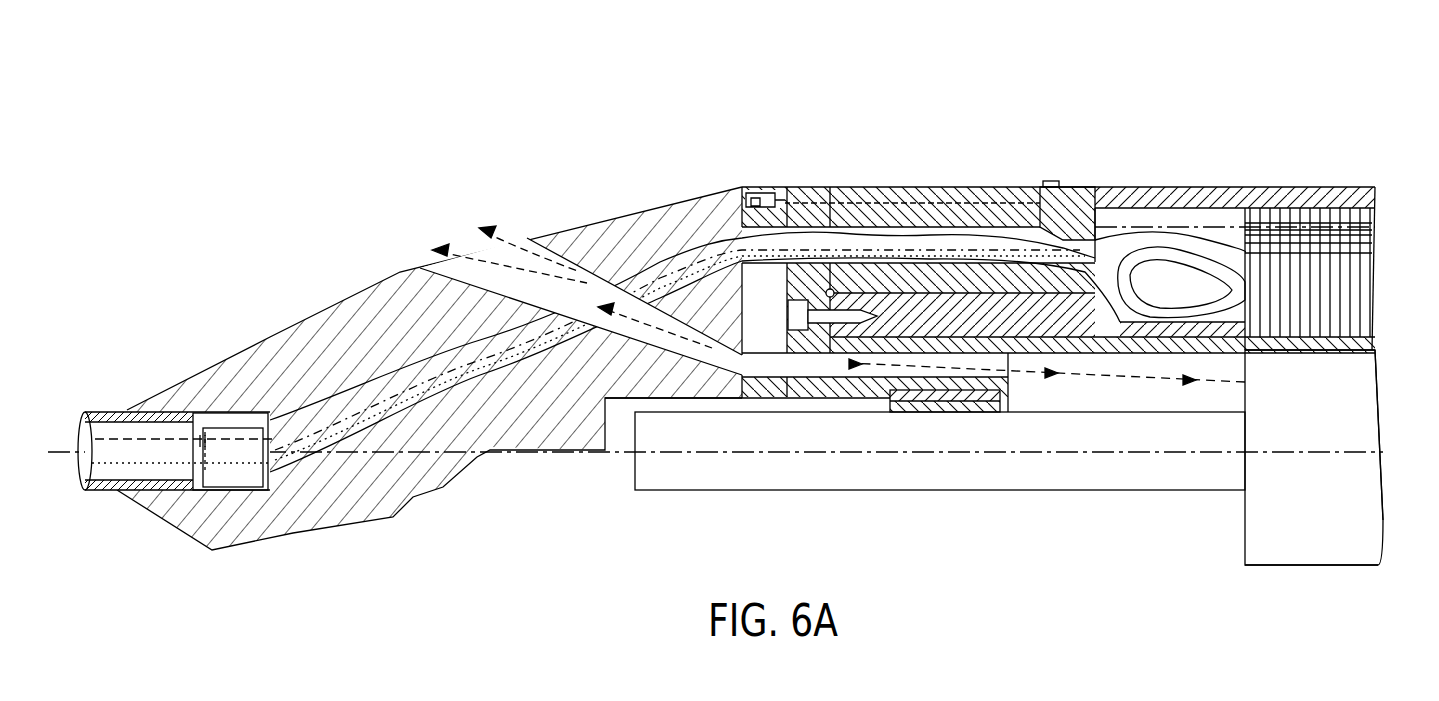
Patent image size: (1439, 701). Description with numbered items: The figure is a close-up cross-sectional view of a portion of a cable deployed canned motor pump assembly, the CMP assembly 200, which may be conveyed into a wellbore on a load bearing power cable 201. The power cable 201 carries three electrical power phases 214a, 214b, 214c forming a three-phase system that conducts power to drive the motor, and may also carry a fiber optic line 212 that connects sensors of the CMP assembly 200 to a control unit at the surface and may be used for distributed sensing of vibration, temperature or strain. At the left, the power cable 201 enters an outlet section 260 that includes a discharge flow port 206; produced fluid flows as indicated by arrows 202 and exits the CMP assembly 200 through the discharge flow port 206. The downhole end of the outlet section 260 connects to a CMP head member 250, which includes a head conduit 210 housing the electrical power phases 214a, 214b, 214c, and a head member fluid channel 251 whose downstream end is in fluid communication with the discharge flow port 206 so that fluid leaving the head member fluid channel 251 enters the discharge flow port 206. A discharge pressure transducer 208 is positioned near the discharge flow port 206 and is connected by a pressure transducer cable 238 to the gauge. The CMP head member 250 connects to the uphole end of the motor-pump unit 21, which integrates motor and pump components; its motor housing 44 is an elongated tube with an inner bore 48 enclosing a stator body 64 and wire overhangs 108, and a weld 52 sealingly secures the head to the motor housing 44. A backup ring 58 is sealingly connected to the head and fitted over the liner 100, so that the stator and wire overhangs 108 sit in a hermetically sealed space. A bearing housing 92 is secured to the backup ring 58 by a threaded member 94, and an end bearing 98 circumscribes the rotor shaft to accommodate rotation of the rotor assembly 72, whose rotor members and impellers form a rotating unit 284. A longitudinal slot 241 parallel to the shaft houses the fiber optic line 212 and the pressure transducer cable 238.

The CMP assembly 200 is at (318, 118).
The power cable 201 is at (137, 410).
The outlet section 260 is at (388, 292).
The arrows 202 is at (480, 265).
The discharge flow port 206 is at (587, 297).
The discharge pressure transducer 208 is at (757, 198).
The end bearing 98 is at (906, 380).
The CMP head member 250 is at (918, 195).
The head conduit 210 is at (978, 238).
The weld 52 is at (1053, 181).
The pressure transducer cable 238 is at (1110, 218).
The wire overhangs 108 is at (1148, 255).
The inner bore 48 is at (1208, 215).
The fiber optic line 212 is at (260, 492).
The motor housing 44 is at (1280, 200).
The stator body 64 is at (1372, 235).
The liner 100 is at (1262, 352).
The longitudinal slot 241 is at (1263, 220).
The rotor assembly 72 is at (1353, 395).
The rotating unit 284 is at (1262, 505).
The motor-pump unit 21 is at (1288, 567).
The threaded member 94 is at (795, 338).
The bearing housing 92 is at (865, 382).
The backup ring 58 is at (940, 322).
The head member fluid channel 251 is at (995, 395).
The first electrical power phase 214a is at (160, 470).
The second electrical power phase 214b is at (185, 482).
The third electrical power phase 214c is at (205, 472).